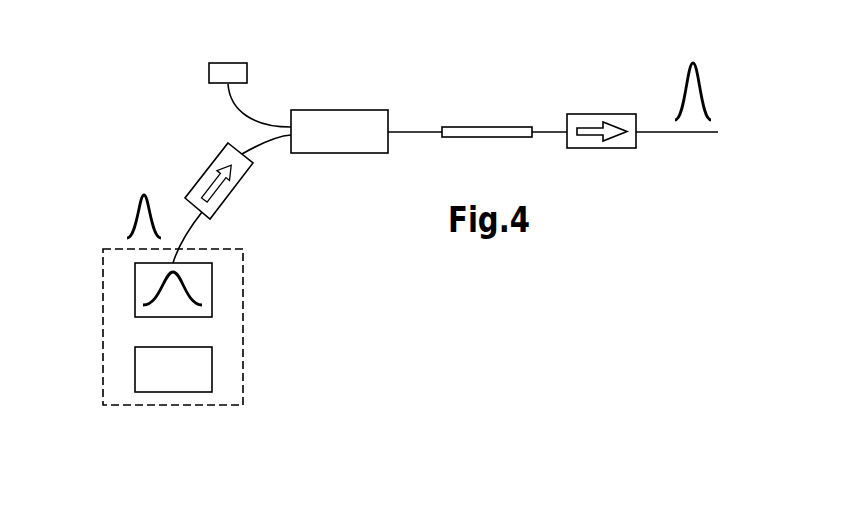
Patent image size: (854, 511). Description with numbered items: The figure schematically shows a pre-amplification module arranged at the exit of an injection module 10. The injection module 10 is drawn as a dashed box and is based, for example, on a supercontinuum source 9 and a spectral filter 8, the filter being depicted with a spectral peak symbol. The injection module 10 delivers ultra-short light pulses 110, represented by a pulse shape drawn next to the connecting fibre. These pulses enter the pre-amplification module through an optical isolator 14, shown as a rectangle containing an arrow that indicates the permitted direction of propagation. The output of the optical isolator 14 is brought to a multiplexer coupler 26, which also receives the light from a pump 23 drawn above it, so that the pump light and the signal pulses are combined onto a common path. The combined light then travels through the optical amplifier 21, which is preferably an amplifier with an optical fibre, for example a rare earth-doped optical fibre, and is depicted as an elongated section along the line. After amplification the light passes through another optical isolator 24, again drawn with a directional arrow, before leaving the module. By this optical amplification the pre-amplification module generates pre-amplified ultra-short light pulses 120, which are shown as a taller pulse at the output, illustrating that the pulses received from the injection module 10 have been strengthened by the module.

The spectral filter 8 is at (212, 280).
The supercontinuum source 9 is at (165, 378).
The injection module 10 is at (103, 363).
The optical isolator 14 is at (225, 200).
The optical amplifier 21 is at (472, 127).
The pump 23 is at (233, 63).
The optical isolator 24 is at (613, 148).
The multiplexer coupler 26 is at (350, 110).
The ultra-short light pulses 110 is at (133, 213).
The pre-amplified ultra-short light pulses 120 is at (700, 84).